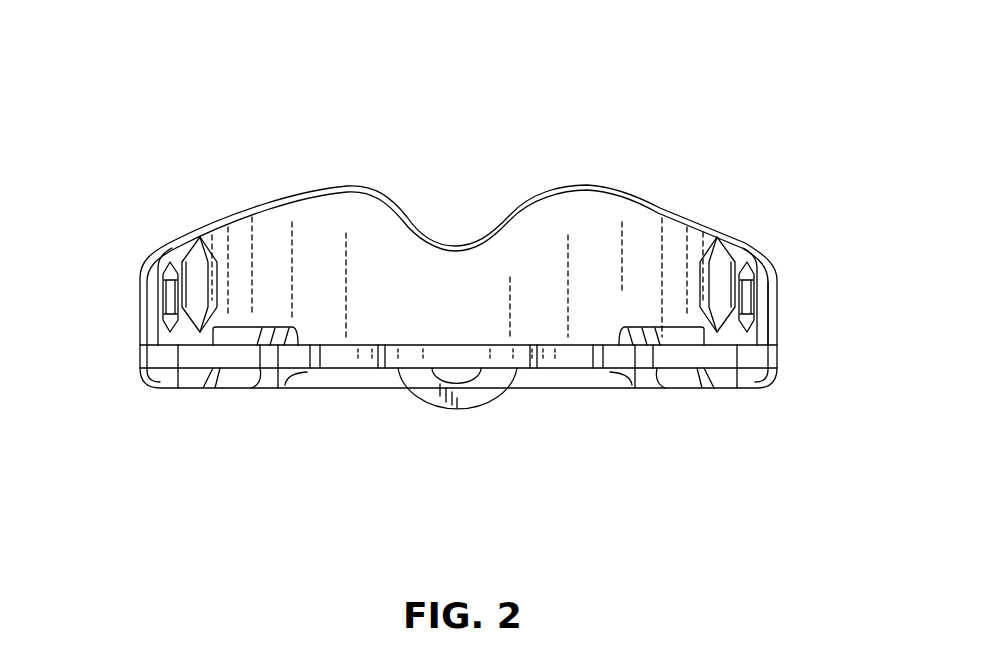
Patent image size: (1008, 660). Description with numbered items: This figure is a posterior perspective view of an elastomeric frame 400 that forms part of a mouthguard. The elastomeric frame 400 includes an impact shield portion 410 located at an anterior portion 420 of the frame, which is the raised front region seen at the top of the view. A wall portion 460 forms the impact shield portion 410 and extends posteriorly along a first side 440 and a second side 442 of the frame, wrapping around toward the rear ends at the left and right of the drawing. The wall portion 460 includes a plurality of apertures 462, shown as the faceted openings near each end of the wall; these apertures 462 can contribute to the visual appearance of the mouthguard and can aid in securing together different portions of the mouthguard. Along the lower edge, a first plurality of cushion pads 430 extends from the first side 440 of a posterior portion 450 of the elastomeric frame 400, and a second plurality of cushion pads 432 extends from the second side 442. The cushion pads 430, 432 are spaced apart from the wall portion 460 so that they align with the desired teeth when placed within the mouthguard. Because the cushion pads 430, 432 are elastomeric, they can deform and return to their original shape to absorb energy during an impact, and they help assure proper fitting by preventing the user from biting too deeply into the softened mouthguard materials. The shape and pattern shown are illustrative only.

The elastomeric frame 400 is at (287, 100).
The impact shield portion 410 is at (583, 186).
The anterior portion 420 is at (635, 176).
The first plurality of cushion pads 430 is at (318, 400).
The second plurality of cushion pads 432 is at (598, 399).
The first side 440 is at (133, 398).
The second side 442 is at (788, 315).
The posterior portion 450 is at (786, 400).
The wall portion 460 is at (728, 262).
The apertures 462 is at (197, 272).